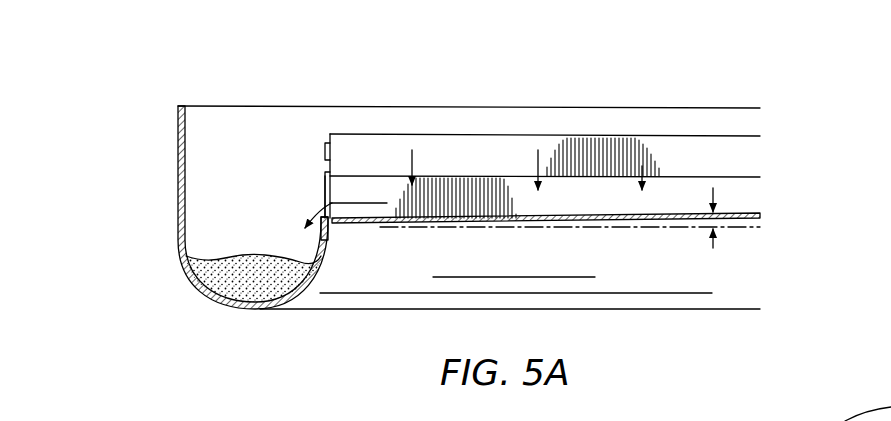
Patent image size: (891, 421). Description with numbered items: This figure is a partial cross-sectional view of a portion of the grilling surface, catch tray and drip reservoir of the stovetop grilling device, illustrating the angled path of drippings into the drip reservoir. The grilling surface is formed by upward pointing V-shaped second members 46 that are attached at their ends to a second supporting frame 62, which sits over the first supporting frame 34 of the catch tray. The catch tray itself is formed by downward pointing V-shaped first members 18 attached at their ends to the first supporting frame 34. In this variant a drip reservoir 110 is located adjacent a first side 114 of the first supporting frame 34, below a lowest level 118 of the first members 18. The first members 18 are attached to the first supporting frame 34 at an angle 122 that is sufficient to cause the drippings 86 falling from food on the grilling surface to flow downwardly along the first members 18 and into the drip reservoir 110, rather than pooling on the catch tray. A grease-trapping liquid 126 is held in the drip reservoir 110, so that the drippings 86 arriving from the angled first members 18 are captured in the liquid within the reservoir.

The first members 18 is at (680, 190).
The first supporting frame 34 is at (323, 197).
The second members 46 is at (680, 155).
The second supporting frame 62 is at (323, 180).
The drippings 86 is at (365, 203).
The drip reservoir 110 is at (200, 275).
The first side 114 is at (320, 200).
The lowest level 118 is at (322, 220).
The angle 122 is at (715, 222).
The grease-trapping liquid 126 is at (253, 290).